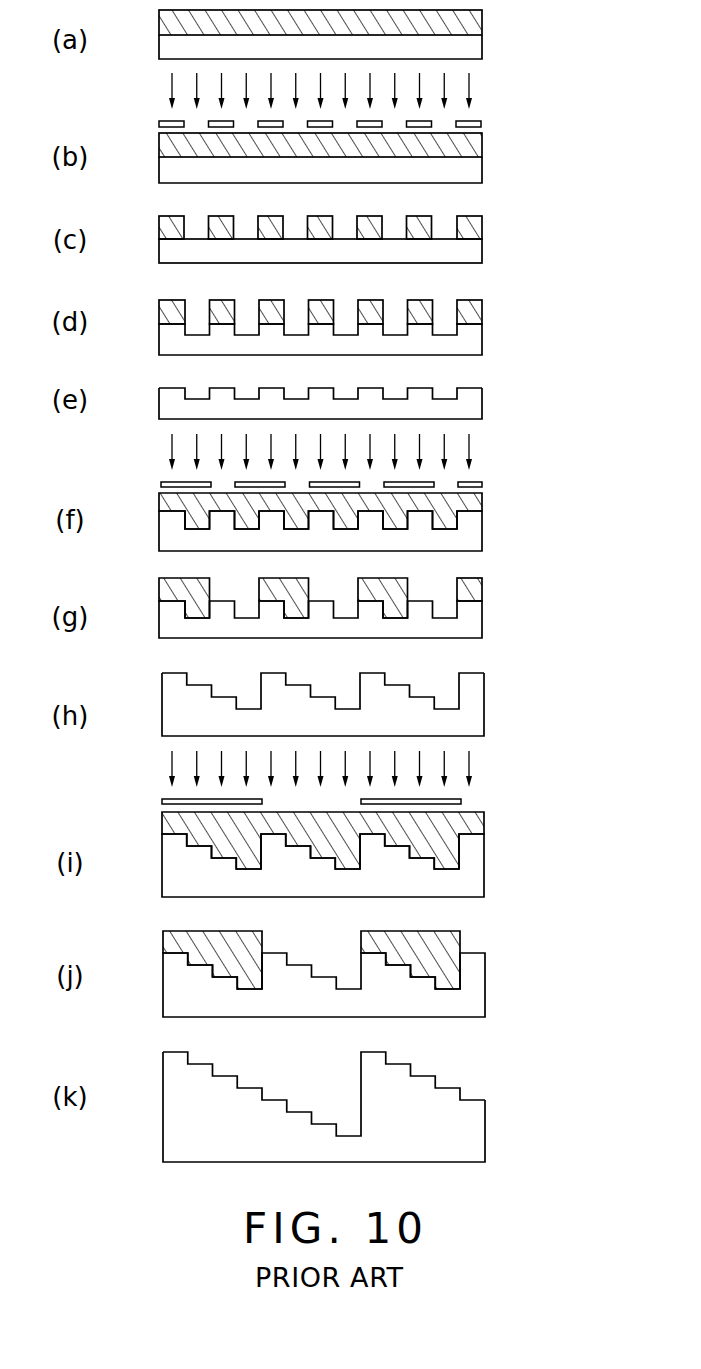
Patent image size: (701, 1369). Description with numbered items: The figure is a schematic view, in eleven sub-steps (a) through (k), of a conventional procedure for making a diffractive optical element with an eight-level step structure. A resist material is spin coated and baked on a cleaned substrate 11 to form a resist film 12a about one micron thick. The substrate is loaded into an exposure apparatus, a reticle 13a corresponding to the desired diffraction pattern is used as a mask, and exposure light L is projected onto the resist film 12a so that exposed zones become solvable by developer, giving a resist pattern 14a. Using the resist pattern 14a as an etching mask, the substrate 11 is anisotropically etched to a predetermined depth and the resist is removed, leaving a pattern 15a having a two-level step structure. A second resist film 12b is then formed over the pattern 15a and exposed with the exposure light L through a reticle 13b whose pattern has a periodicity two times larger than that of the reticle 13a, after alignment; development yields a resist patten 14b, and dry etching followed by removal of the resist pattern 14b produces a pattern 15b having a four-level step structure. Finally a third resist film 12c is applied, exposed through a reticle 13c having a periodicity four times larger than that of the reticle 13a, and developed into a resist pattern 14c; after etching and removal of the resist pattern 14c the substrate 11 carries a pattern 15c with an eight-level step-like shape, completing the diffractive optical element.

The substrate 11 is at (470, 47).
The resist film 12a is at (479, 21).
The resist film 12b is at (472, 500).
The resist film 12c is at (473, 823).
The reticle 13a is at (480, 124).
The reticle 13b is at (480, 487).
The reticle 13c is at (460, 802).
The resist pattern 14a is at (470, 227).
The resist pattern 14b is at (470, 590).
The resist pattern 14c is at (445, 942).
The pattern having a two-level step structure 15a is at (447, 391).
The pattern having a four-level step structure 15b is at (432, 689).
The pattern having an eight-level step-like shape 15c is at (332, 1093).
The exposure light L is at (470, 86).